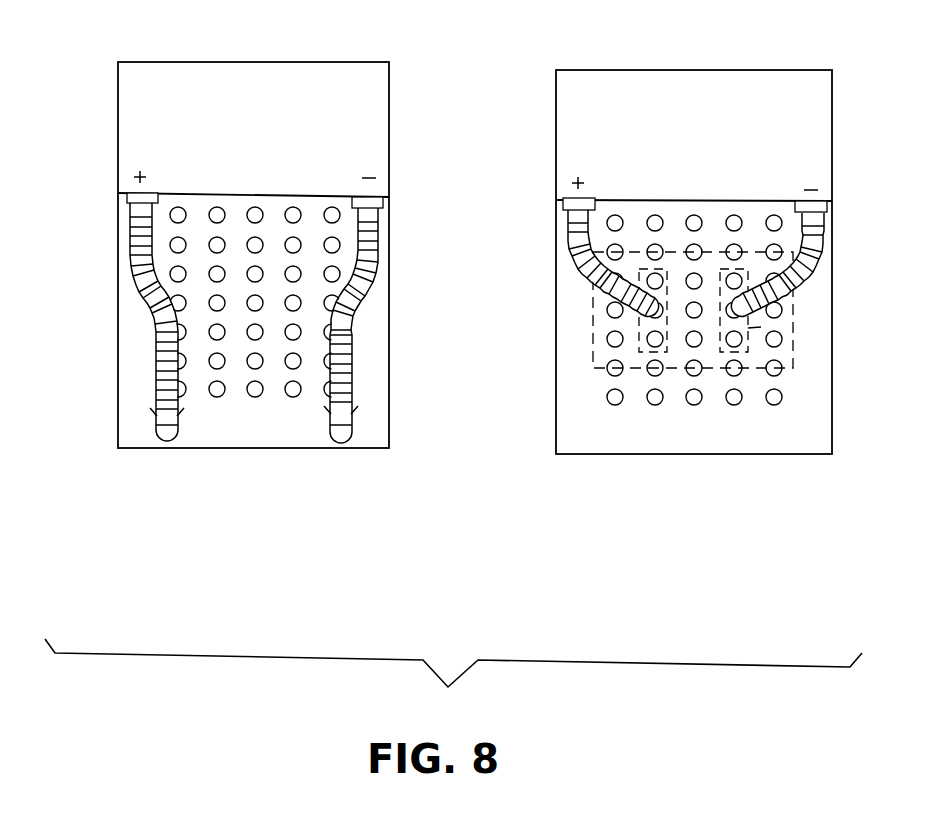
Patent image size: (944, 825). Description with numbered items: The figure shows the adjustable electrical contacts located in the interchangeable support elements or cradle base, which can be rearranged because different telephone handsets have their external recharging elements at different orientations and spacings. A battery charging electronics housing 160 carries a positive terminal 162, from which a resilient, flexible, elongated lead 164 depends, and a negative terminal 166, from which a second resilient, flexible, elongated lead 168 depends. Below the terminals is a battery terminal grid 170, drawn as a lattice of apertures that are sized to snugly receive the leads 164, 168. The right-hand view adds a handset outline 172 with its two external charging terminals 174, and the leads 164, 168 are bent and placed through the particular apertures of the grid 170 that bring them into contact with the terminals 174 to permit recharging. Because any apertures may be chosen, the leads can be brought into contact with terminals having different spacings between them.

The battery charging electronics housing 160 is at (258, 96).
The positive terminal 162 is at (148, 192).
The resilient, flexible, elongated lead 164 is at (180, 338).
The negative terminal 166 is at (358, 193).
The second resilient, flexible, elongated lead 168 is at (342, 323).
The battery terminal grid 170 is at (246, 400).
The handset outline 172 is at (795, 363).
The external charging terminals 174 is at (797, 319).